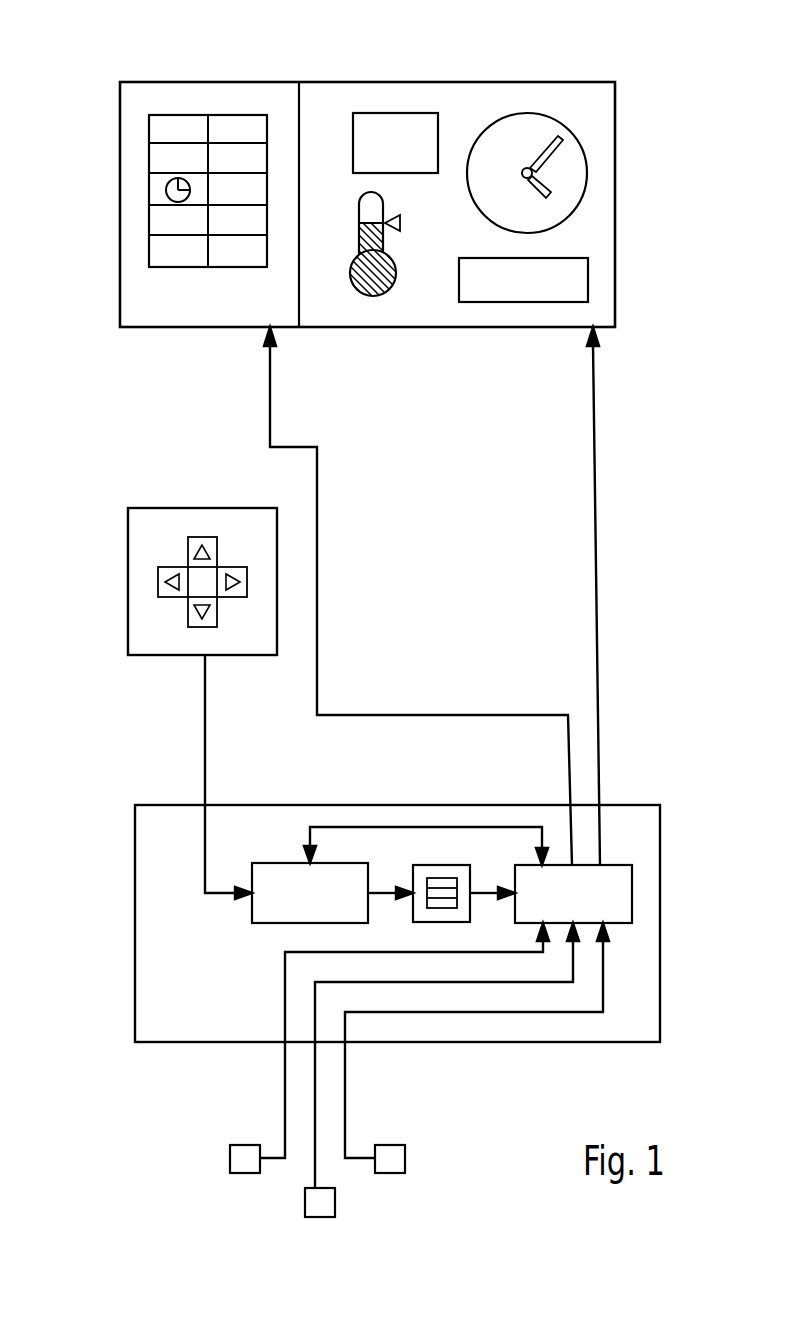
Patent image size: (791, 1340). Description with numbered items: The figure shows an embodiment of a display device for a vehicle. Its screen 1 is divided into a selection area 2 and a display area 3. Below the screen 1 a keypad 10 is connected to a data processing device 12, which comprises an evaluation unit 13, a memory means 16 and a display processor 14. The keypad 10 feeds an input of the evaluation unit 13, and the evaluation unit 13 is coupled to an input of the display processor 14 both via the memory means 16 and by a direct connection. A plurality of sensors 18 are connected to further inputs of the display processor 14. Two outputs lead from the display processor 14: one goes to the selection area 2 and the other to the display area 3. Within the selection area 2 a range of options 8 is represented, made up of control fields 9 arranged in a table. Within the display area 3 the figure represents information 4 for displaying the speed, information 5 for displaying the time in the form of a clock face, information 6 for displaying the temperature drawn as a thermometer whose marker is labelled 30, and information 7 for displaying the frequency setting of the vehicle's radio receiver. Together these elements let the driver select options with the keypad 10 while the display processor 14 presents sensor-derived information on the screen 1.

The screen 1 is at (313, 76).
The selection area 2 is at (268, 93).
The display area 3 is at (453, 88).
The information for displaying the speed 4 is at (380, 113).
The information for displaying the time 5 is at (510, 113).
The information for displaying the temperature 6 is at (373, 300).
The information for displaying the frequency setting 7 is at (517, 302).
The range of options 8 is at (135, 130).
The control fields 9 is at (218, 115).
The keypad 10 is at (137, 540).
The data processing device 12 is at (650, 823).
The evaluation unit 13 is at (310, 893).
The display processor 14 is at (573, 894).
The memory means 16 is at (413, 866).
The sensors 18 is at (390, 1163).
The temperature marker 30 is at (366, 225).